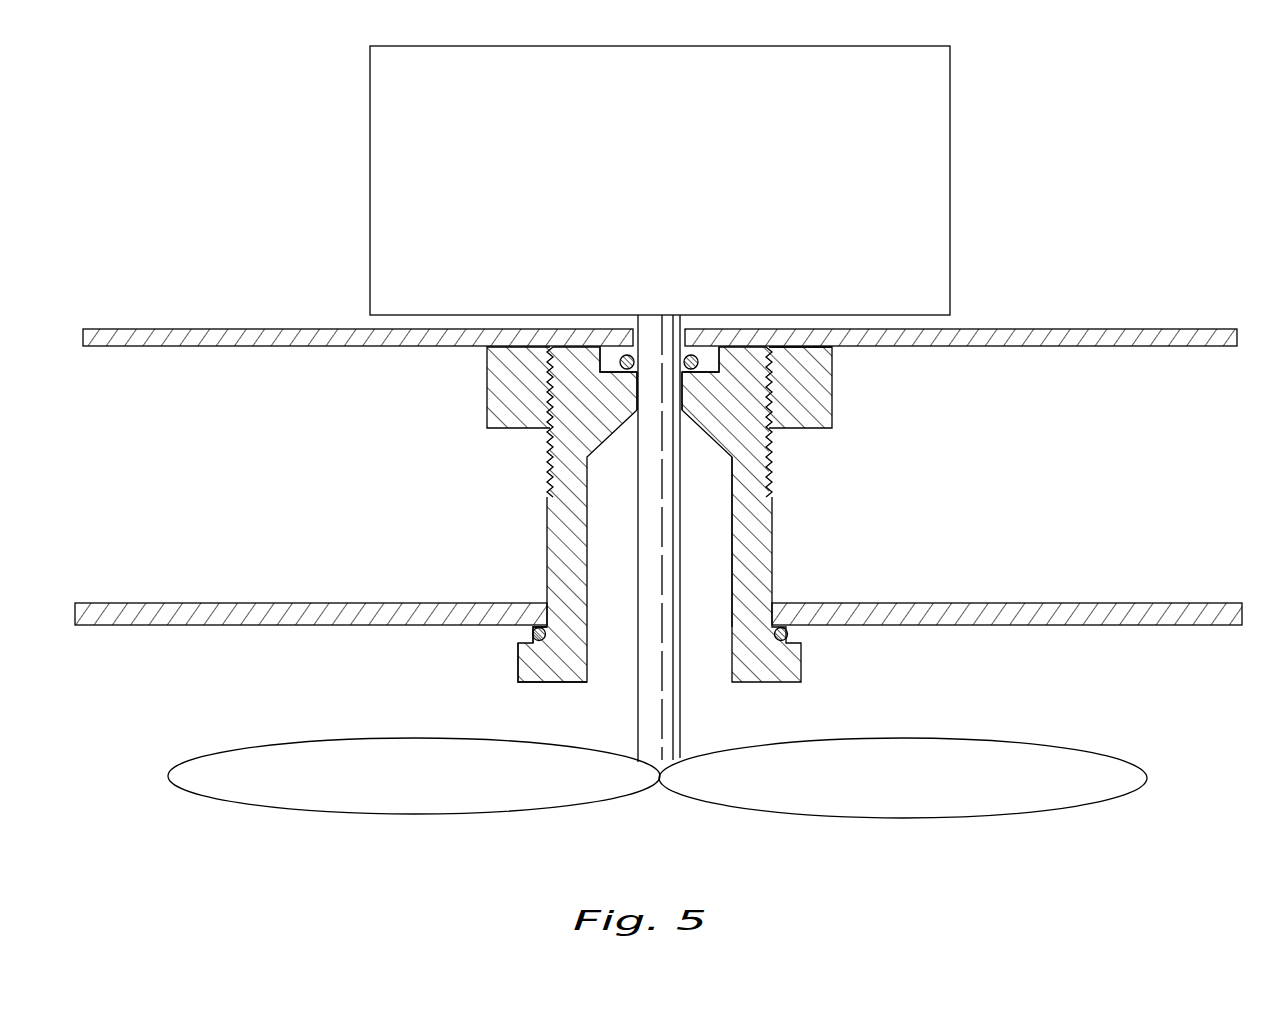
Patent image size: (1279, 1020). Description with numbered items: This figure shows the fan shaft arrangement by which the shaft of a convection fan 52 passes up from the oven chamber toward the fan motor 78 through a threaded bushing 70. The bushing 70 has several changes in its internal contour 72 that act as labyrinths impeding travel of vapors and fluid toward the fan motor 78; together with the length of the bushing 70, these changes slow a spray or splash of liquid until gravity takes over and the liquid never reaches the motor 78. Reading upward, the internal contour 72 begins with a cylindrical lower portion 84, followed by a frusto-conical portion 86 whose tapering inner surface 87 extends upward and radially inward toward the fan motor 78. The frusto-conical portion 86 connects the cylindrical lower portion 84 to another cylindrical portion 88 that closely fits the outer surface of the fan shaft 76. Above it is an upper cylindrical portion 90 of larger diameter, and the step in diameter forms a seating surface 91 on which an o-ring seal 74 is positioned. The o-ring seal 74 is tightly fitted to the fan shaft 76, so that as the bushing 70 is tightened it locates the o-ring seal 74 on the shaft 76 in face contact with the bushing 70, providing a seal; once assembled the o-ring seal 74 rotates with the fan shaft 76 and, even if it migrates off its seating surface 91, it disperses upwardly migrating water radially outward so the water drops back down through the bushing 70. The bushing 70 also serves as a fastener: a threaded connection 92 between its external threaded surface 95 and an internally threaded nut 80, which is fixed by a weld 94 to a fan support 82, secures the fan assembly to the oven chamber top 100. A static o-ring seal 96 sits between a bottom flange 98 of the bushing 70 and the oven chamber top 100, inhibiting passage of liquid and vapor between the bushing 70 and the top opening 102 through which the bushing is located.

The convection fan 52 is at (1023, 803).
The bushing 70 is at (519, 489).
The internal contour 72 is at (787, 488).
The o-ring seal 74 is at (611, 365).
The fan shaft 76 is at (652, 503).
The fan motor 78 is at (950, 143).
The nut 80 is at (858, 401).
The fan support 82 is at (1103, 347).
The cylindrical lower portion 84 is at (728, 615).
The frusto-conical portion 86 is at (707, 448).
The tapering inner surface 87 is at (585, 480).
The cylindrical portion 88 is at (657, 393).
The upper cylindrical portion 90 is at (622, 356).
The seating surface 91 is at (705, 395).
The threaded connection 92 is at (537, 395).
The weld 94 is at (833, 348).
The external threaded surface 95 is at (772, 467).
The static o-ring seal 96 is at (531, 639).
The bottom flange 98 is at (555, 683).
The oven chamber top 100 is at (1093, 603).
The top opening 102 is at (553, 612).